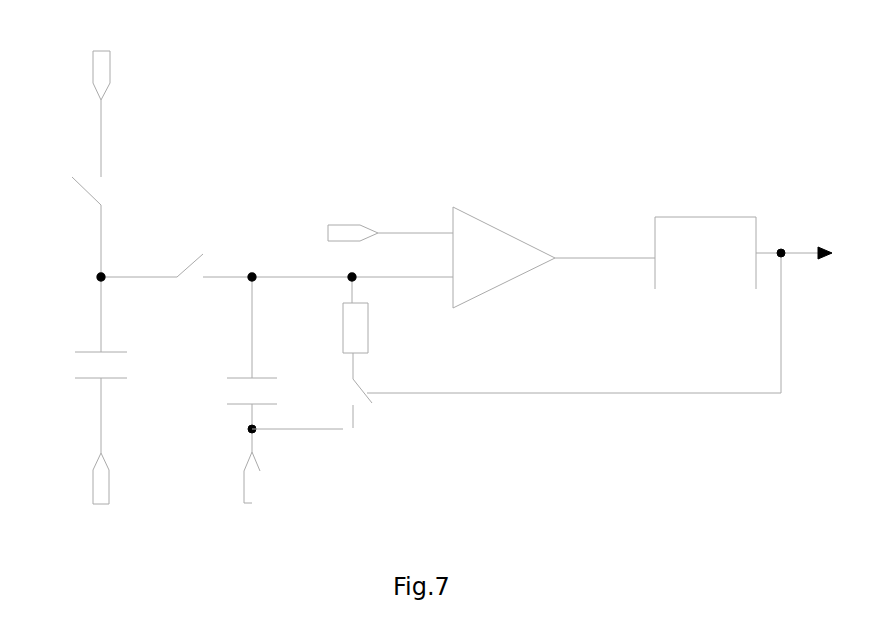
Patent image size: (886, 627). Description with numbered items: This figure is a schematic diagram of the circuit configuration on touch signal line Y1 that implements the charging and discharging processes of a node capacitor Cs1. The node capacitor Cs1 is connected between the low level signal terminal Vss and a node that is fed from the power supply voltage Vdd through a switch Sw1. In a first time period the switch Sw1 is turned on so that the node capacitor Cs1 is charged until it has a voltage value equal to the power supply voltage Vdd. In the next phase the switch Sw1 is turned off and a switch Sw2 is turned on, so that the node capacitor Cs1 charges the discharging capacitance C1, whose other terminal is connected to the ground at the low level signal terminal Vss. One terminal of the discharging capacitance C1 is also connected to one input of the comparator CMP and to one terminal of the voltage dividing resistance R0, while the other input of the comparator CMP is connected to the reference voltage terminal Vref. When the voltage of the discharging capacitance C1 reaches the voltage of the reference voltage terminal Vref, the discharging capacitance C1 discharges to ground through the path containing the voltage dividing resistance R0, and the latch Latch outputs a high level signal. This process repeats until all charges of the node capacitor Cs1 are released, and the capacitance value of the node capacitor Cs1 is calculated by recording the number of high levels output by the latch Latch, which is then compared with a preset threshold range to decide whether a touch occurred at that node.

The power supply voltage Vdd is at (103, 98).
The switch Sw1 is at (65, 217).
The switch Sw2 is at (199, 253).
The node capacitor Cs1 is at (79, 365).
The low level signal terminal Vss is at (177, 478).
The discharging capacitance C1 is at (285, 355).
The voltage dividing resistance R0 is at (370, 352).
The reference voltage terminal Vref is at (368, 233).
The comparator CMP is at (554, 257).
The latch Latch is at (743, 253).